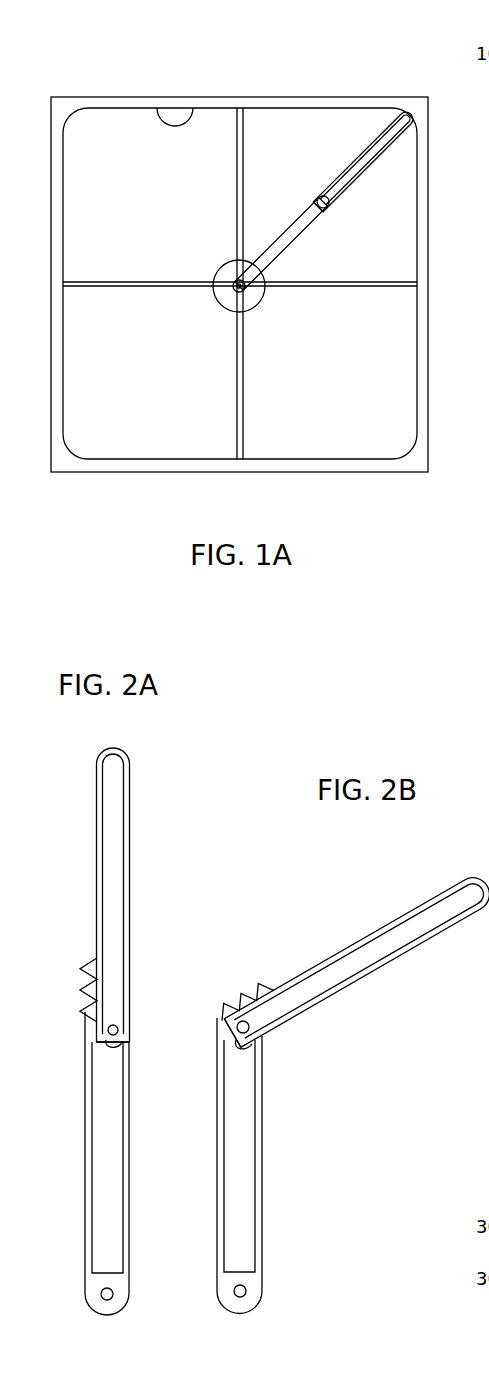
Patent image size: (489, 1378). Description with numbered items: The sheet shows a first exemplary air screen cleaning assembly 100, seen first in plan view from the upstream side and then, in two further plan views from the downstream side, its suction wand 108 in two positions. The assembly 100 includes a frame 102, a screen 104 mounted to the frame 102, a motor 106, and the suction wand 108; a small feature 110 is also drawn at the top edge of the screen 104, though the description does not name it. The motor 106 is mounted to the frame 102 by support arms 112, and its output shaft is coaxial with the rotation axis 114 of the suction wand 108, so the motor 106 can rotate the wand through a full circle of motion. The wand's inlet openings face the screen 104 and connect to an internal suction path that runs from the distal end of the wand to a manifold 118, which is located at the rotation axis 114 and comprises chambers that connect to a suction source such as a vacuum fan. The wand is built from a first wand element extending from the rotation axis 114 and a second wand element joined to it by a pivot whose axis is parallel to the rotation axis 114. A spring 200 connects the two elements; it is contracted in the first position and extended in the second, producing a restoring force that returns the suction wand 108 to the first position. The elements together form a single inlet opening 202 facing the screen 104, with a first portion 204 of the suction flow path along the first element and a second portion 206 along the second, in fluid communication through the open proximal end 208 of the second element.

In FIG. 1A, the air screen cleaning assembly 100 is at (118, 55).
In FIG. 1A, the frame 102 is at (76, 97).
In FIG. 1A, the screen 104 is at (256, 130).
In FIG. 1A, the motor 106 is at (214, 301).
In FIG. 1A, the suction wand 108 is at (302, 199).
In FIG. 1A, the notch 110 is at (191, 126).
In FIG. 1A, the support arms 112 is at (396, 284).
In FIG. 1A, the rotation axis 114 is at (260, 296).
In FIG. 1A, the manifold 118 is at (232, 282).
In FIG. 2A, the spring 200 is at (88, 962).
In FIG. 2B, the spring 200 is at (262, 987).
In FIG. 2A, the inlet opening 202 is at (129, 975).
In FIG. 2B, the inlet opening 202 is at (324, 1007).
In FIG. 2A, the first portion of the internal suction flow path 204 is at (111, 1149).
In FIG. 2B, the first portion of the internal suction flow path 204 is at (239, 1147).
In FIG. 2A, the second portion of the internal suction flow path 206 is at (113, 819).
In FIG. 2B, the second portion of the internal suction flow path 206 is at (377, 950).
In FIG. 2A, the open proximal end 208 is at (108, 1044).
In FIG. 2B, the open proximal end 208 is at (233, 1043).